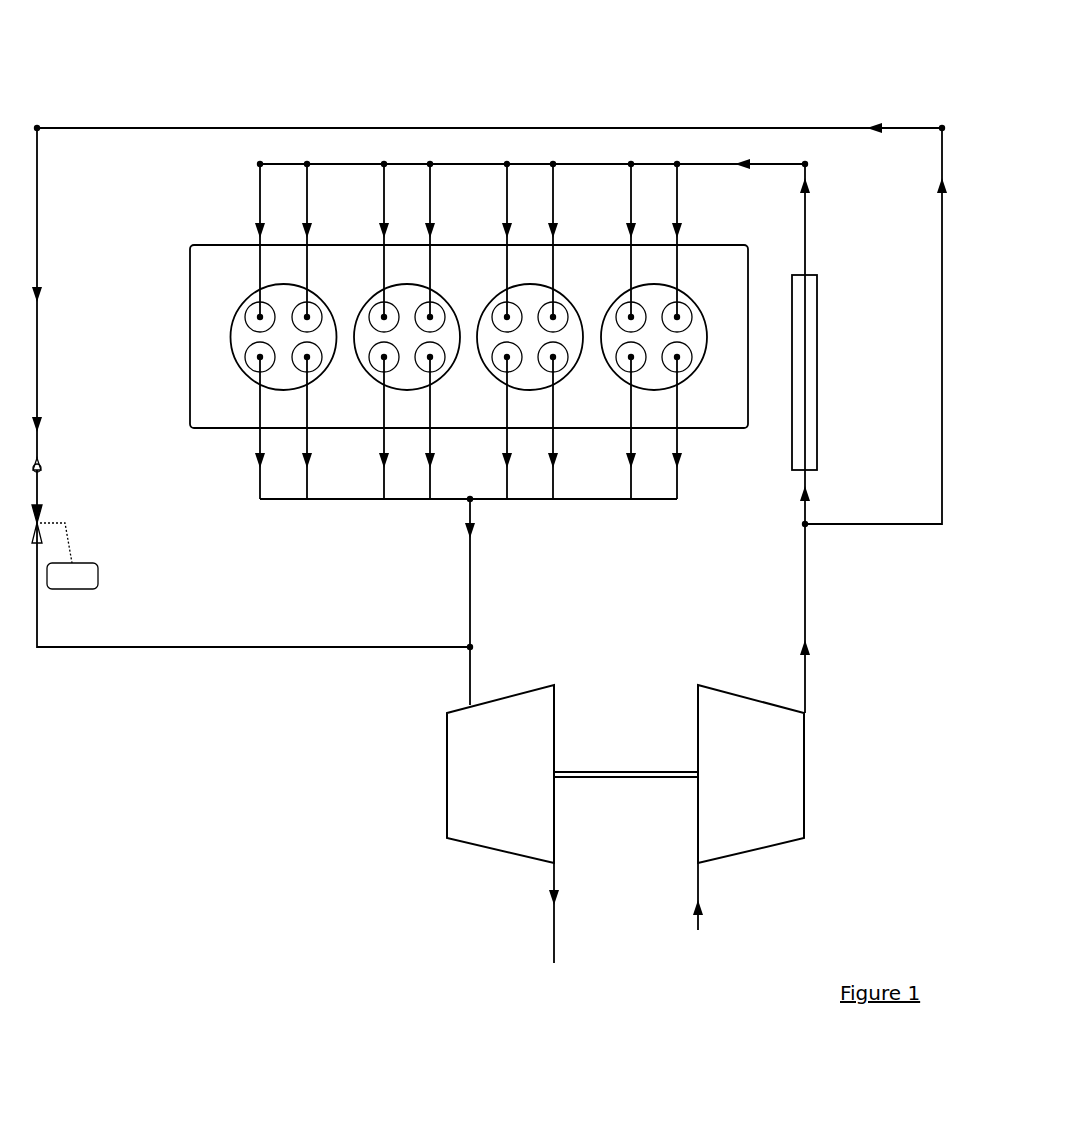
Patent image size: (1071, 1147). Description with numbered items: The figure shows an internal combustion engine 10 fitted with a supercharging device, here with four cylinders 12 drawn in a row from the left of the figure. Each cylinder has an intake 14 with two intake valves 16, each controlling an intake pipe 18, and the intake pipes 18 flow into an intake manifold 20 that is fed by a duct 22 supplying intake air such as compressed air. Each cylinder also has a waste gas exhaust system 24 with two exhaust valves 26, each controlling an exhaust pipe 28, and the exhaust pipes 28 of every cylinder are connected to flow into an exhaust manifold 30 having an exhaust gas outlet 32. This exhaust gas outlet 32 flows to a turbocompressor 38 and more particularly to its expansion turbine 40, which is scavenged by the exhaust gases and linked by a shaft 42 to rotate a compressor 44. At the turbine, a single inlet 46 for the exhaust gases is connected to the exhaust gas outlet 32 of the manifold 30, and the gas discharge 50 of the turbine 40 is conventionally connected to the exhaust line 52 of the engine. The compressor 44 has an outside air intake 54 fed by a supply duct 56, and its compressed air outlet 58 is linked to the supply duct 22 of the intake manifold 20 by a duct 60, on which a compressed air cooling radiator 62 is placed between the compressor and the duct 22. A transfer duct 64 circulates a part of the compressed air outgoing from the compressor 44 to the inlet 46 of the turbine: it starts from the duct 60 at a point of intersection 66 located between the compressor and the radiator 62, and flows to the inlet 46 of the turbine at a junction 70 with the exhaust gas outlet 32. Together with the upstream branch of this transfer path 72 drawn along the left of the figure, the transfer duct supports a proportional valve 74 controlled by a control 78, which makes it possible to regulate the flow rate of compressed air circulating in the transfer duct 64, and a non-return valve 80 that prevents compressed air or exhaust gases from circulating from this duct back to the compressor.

The internal combustion engine 10 is at (188, 230).
The cylinders 12 is at (608, 340).
The intake 14 is at (324, 216).
The intake valve 16 is at (428, 306).
The intake pipe 18 is at (551, 266).
The intake manifold 20 is at (465, 164).
The duct for supplying intake air 22 is at (780, 164).
The waste gas exhaust system 24 is at (703, 452).
The exhaust valve 26 is at (545, 372).
The exhaust pipe 28 is at (428, 408).
The exhaust manifold 30 is at (355, 499).
The exhaust gas outlet 32 is at (470, 575).
The turbocompressor 38 is at (633, 813).
The expansion turbine 40 is at (470, 838).
The shaft 42 is at (680, 778).
The compressor 44 is at (775, 848).
The inlet 46 is at (470, 713).
The gas discharge 50 is at (553, 862).
The exhaust line 52 is at (554, 921).
The outside air intake 54 is at (698, 862).
The supply duct 56 is at (698, 922).
The compressed air outlet 58 is at (775, 740).
The duct 60 is at (805, 628).
The compressed air cooling radiator 62 is at (817, 414).
The transfer duct 64 is at (942, 400).
The point of intersection 66 is at (805, 524).
The junction 70 is at (470, 647).
The recirculation line 72 is at (487, 385).
The valve 74 is at (42, 515).
The control 78 is at (69, 556).
The non-return valve 80 is at (42, 460).